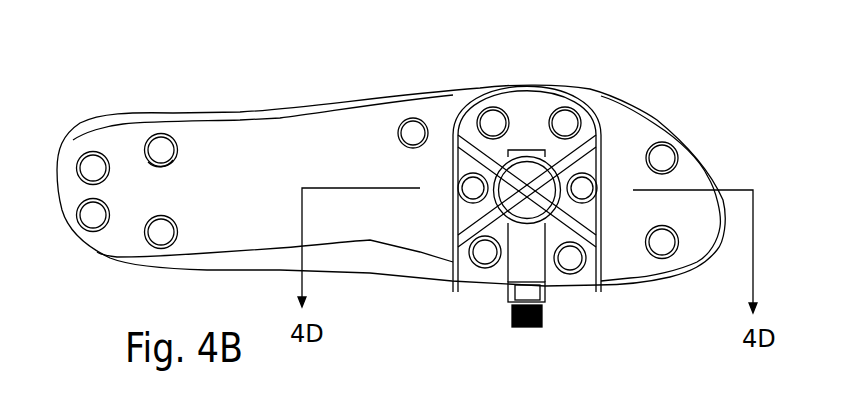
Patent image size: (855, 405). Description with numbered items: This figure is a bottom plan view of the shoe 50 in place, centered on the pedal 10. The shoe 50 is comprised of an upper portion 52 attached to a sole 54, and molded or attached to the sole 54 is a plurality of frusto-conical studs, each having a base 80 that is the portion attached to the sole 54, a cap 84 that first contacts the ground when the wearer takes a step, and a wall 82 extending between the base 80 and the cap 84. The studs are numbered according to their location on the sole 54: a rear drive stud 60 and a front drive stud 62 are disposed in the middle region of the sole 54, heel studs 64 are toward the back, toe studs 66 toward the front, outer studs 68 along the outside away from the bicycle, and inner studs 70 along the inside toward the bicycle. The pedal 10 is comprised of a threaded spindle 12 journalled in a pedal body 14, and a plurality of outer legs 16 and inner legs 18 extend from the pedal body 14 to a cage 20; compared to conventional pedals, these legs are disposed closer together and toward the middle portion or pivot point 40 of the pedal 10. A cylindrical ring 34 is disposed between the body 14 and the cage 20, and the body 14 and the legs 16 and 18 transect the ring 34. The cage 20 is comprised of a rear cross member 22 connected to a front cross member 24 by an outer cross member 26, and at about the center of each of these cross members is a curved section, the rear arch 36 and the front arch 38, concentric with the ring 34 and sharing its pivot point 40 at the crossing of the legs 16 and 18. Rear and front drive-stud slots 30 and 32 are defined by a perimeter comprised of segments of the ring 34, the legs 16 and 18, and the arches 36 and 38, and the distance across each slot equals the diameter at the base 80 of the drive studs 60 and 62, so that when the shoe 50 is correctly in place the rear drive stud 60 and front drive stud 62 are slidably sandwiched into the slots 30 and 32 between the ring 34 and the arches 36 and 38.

The pedal 10 is at (500, 308).
The threaded spindle 12 is at (527, 327).
The pedal body 14 is at (527, 250).
The outer legs 16 is at (473, 102).
The inner legs 18 is at (460, 292).
The cage 20 is at (556, 92).
The rear cross member 22 is at (447, 262).
The front cross member 24 is at (597, 258).
The outer cross member 26 is at (532, 90).
The rear drive-stud slot 30 is at (456, 255).
The front drive-stud slot 32 is at (598, 212).
The cylindrical ring 34 is at (598, 114).
The rear arch 36 is at (453, 190).
The front arch 38 is at (597, 190).
The pivot point 40 is at (528, 183).
The shoe 50 is at (305, 97).
The upper portion 52 is at (373, 257).
The sole 54 is at (307, 160).
The rear drive stud 60 is at (472, 187).
The front drive stud 62 is at (585, 183).
The heel studs 64 is at (160, 233).
The toe studs 66 is at (662, 158).
The outer studs 68 is at (412, 128).
The inner studs 70 is at (571, 258).
The base 80 is at (176, 142).
The wall 82 is at (163, 151).
The cap 84 is at (173, 160).